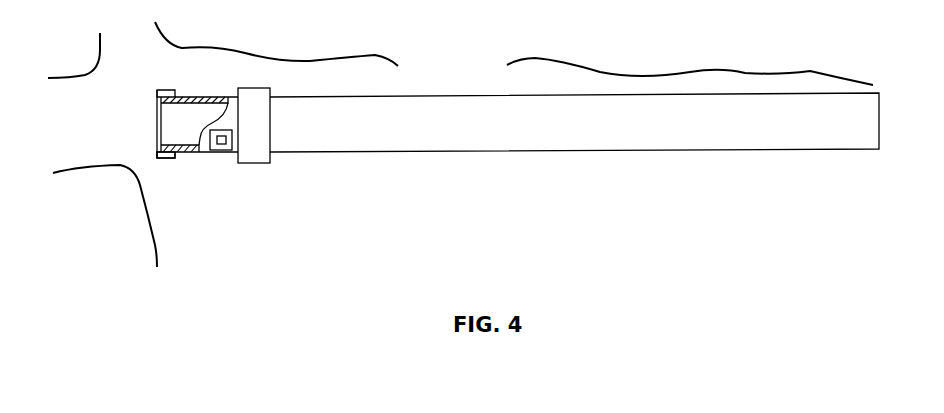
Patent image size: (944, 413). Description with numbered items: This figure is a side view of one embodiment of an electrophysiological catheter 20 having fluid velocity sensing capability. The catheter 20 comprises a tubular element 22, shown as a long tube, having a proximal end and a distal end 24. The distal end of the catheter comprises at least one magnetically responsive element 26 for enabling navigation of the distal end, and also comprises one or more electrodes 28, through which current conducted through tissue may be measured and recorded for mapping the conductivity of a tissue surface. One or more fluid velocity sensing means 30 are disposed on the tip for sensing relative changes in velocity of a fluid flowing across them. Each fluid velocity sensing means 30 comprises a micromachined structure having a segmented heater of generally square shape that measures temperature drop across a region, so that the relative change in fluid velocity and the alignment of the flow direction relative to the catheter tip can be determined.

The electrophysiological catheter 20 is at (470, 73).
The tubular element 22 is at (433, 152).
The distal end 24 is at (139, 128).
The magnetically responsive element 26 is at (262, 155).
The electrode 28 is at (156, 157).
The fluid velocity sensing means 30 is at (219, 151).